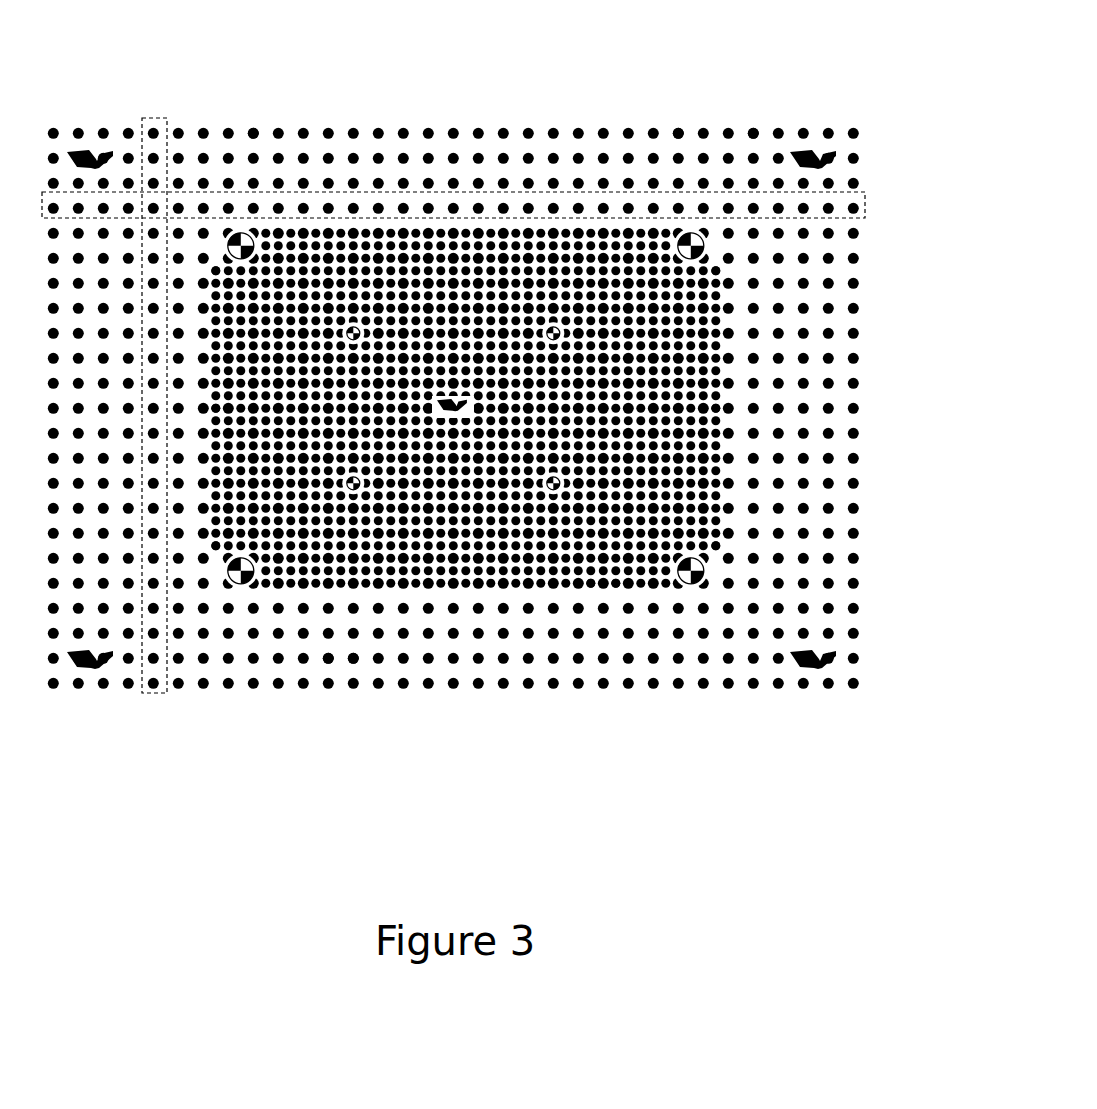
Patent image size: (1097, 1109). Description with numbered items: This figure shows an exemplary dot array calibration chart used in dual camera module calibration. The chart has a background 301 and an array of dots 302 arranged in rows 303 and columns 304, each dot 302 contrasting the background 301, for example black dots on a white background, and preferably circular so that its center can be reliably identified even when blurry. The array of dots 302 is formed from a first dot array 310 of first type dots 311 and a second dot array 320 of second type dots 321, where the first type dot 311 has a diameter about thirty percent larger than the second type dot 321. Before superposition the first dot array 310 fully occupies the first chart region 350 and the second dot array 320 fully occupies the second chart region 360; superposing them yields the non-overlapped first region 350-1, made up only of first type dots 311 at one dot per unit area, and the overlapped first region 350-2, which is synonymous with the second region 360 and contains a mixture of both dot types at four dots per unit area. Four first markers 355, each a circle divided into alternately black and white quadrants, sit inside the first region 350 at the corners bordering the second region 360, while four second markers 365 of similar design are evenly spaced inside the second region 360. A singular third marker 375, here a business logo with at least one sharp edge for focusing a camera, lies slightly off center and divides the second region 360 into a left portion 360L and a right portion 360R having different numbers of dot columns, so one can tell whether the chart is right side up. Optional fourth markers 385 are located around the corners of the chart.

The background 301 is at (668, 140).
The dot 302 is at (754, 132).
The row 303 is at (863, 192).
The column 304 is at (158, 118).
The first dot array 310 is at (330, 656).
The first type dot 311 is at (254, 132).
The second dot array 320 is at (590, 586).
The second type dot 321 is at (617, 586).
The first chart region 350 is at (268, 662).
The non-overlapped first region 350-1 is at (366, 665).
The overlapped first region 350-2 is at (500, 582).
The first marker 355 is at (693, 586).
The second chart region 360 is at (442, 580).
The left portion 360L is at (217, 552).
The right portion 360R is at (716, 446).
The second marker 365 is at (548, 586).
The third marker 375 is at (470, 404).
The fourth marker 385 is at (92, 668).